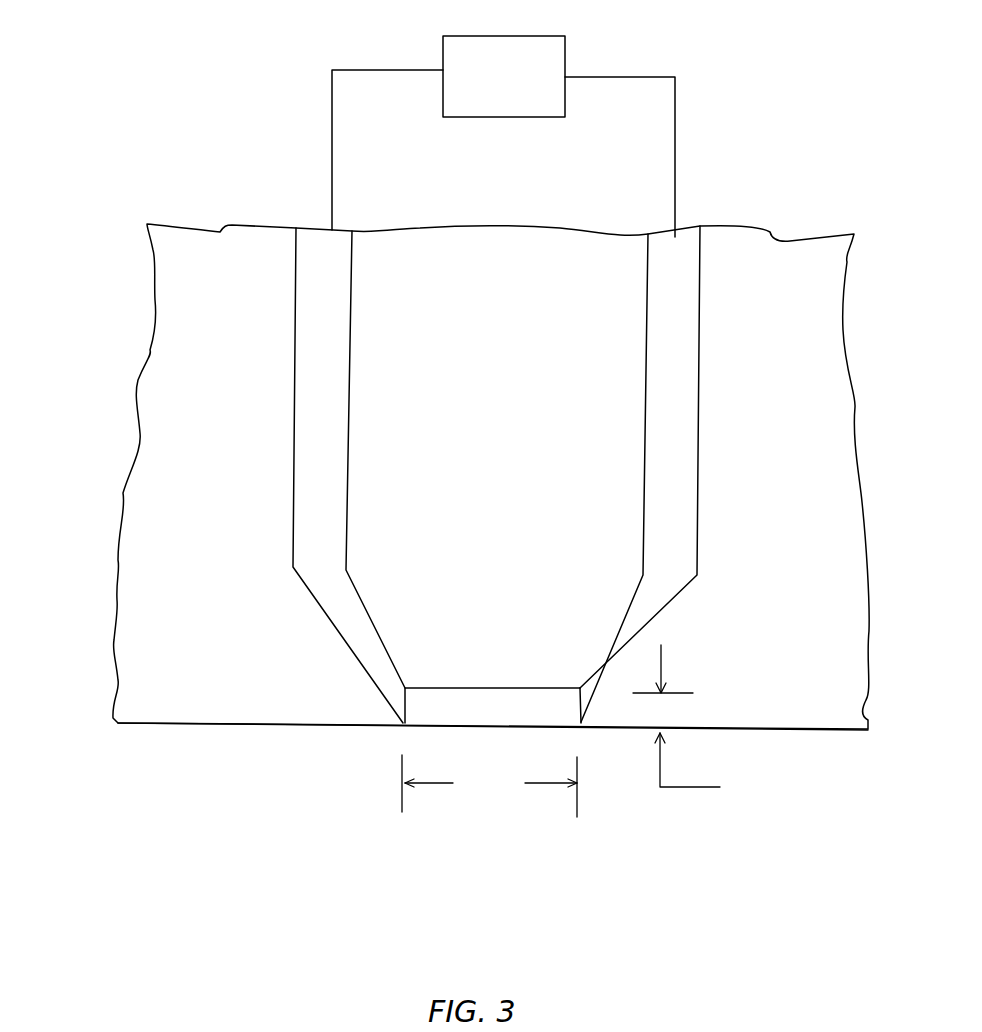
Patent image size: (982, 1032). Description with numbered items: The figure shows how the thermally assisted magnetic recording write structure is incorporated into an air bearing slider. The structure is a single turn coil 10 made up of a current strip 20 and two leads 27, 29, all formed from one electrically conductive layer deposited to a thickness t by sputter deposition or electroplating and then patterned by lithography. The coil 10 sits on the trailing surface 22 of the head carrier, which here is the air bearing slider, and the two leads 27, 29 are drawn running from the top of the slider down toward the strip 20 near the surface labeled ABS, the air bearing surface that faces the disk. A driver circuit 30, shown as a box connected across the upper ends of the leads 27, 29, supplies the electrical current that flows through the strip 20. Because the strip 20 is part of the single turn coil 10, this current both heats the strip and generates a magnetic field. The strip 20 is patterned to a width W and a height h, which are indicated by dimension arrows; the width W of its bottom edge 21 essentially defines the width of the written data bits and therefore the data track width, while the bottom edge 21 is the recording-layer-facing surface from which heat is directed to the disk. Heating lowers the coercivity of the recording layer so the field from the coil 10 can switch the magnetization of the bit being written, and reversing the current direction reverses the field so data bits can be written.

The single turn coil 10 is at (216, 312).
The current strip 20 is at (437, 712).
The bottom edge 21 is at (548, 730).
The trailing surface 22 is at (133, 632).
The lead 27 is at (332, 363).
The lead 29 is at (668, 390).
The driver circuit 30 is at (486, 91).
The air bearing surface ABS is at (165, 722).
The width W is at (489, 786).
The height h is at (692, 724).